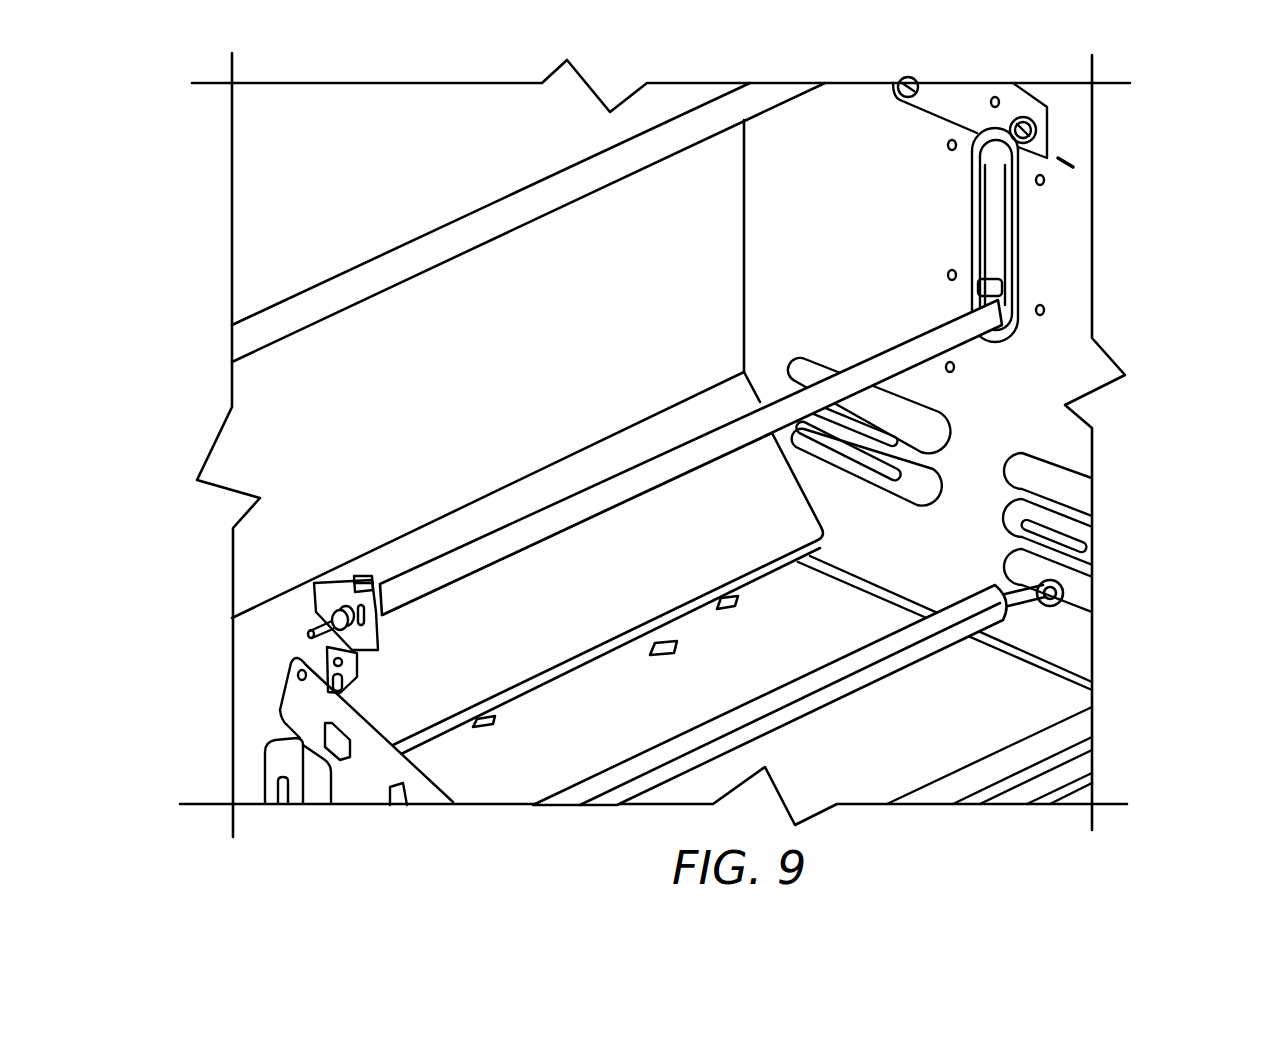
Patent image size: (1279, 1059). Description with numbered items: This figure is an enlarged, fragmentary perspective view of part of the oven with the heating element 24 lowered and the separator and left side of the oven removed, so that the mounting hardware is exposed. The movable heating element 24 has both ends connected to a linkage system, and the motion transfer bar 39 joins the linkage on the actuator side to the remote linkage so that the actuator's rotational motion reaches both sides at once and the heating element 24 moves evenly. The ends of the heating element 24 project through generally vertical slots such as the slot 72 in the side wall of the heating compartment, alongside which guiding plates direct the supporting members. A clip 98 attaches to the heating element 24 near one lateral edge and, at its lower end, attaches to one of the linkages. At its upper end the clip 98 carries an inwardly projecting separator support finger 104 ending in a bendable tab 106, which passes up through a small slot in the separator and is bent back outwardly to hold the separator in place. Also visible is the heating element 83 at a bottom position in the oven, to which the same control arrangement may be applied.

The heating element 24 is at (872, 368).
The motion transfer bar 39 is at (913, 660).
The slot 72 is at (995, 223).
The heating element 83 is at (893, 640).
The clip 98 is at (690, 484).
The separator support finger 104 is at (345, 580).
The bendable tab 106 is at (360, 575).